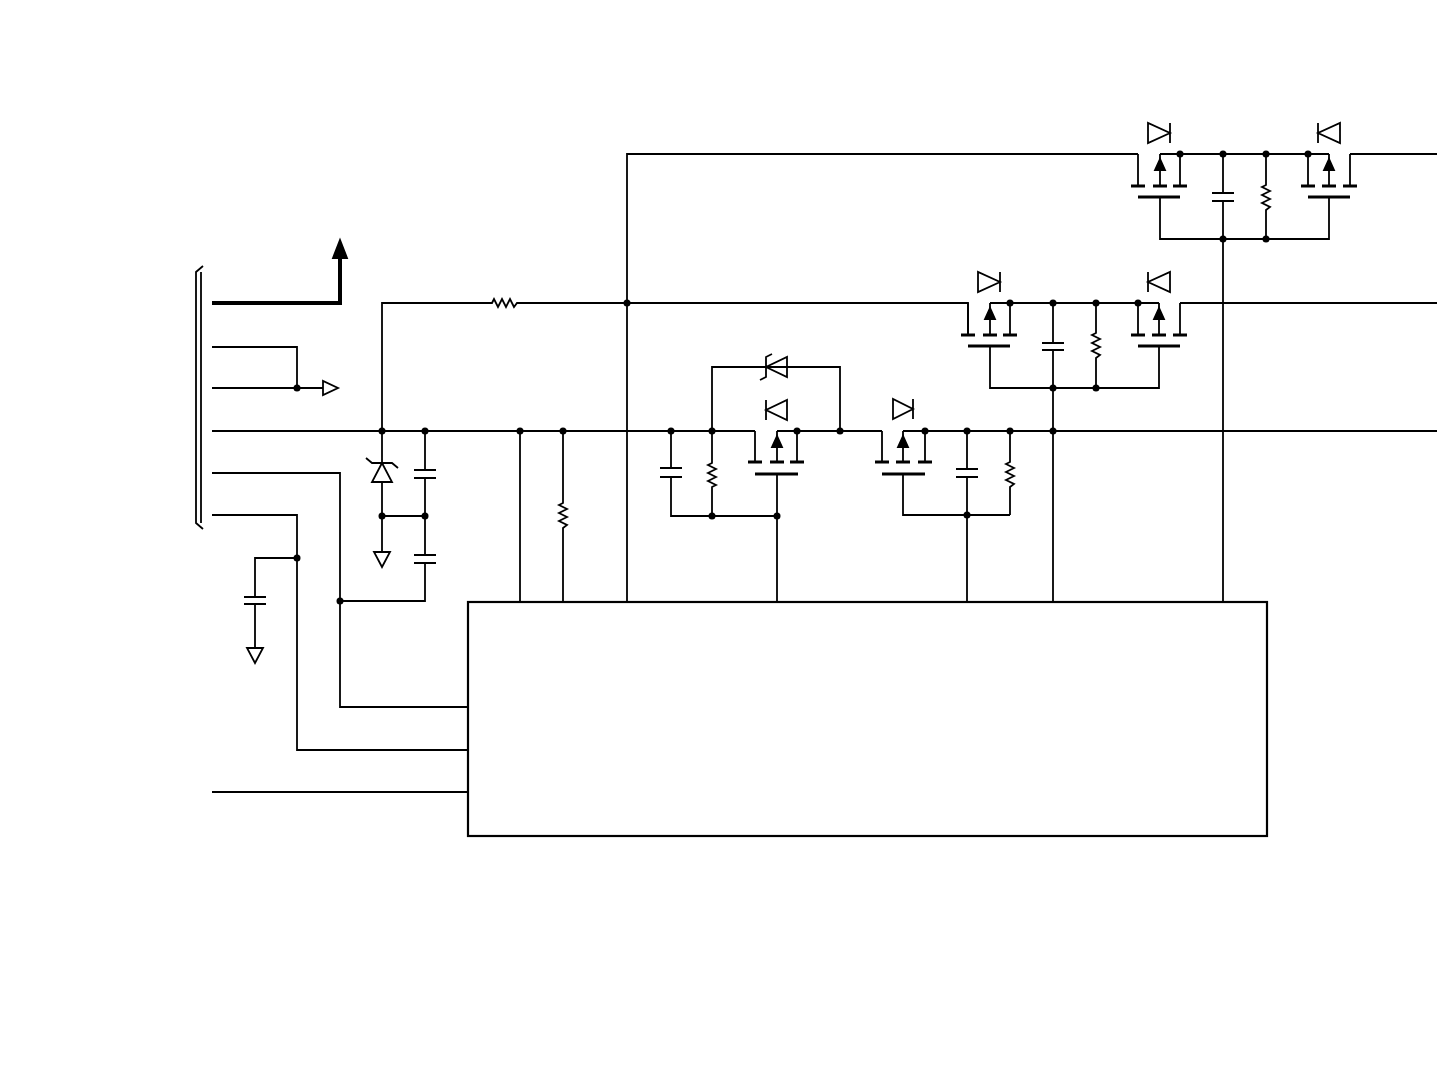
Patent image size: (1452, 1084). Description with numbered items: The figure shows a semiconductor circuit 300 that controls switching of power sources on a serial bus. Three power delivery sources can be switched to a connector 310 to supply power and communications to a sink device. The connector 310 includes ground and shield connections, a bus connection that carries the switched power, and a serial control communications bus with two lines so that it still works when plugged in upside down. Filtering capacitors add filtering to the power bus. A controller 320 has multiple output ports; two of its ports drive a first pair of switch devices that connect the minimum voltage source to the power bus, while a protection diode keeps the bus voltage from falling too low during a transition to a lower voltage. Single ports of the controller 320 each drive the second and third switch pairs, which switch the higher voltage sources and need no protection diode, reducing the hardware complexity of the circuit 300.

The semiconductor circuit 300 is at (757, 506).
The connector 310 is at (196, 392).
The controller 320 is at (887, 798).